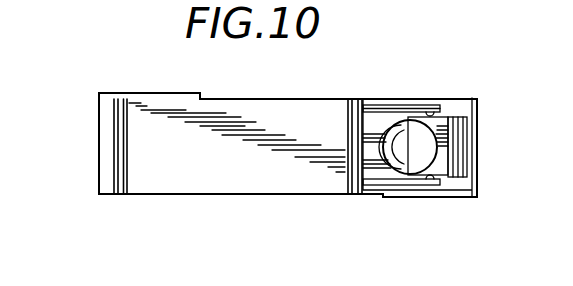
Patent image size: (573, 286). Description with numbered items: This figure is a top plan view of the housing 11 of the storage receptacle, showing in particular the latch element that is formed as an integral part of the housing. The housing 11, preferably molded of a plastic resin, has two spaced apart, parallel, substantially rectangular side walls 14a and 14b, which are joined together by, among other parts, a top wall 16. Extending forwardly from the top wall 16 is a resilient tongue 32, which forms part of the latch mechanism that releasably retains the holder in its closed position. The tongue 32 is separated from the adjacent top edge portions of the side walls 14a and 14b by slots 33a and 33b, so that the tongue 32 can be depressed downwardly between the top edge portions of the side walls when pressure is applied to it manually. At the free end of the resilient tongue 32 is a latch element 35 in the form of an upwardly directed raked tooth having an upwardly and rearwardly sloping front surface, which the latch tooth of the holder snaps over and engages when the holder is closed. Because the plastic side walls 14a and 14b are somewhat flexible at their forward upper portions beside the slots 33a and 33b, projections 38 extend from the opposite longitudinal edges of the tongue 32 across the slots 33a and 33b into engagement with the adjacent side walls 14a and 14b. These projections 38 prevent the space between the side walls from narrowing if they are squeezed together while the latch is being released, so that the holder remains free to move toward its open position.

The housing 11 is at (96, 142).
The top wall 16 is at (175, 184).
The resilient tongue 32 is at (372, 112).
The side wall 14a is at (370, 188).
The side wall 14b is at (385, 106).
The slot 33a is at (393, 186).
The slot 33b is at (410, 108).
The projections 38 is at (435, 106).
The latch element 35 is at (465, 152).